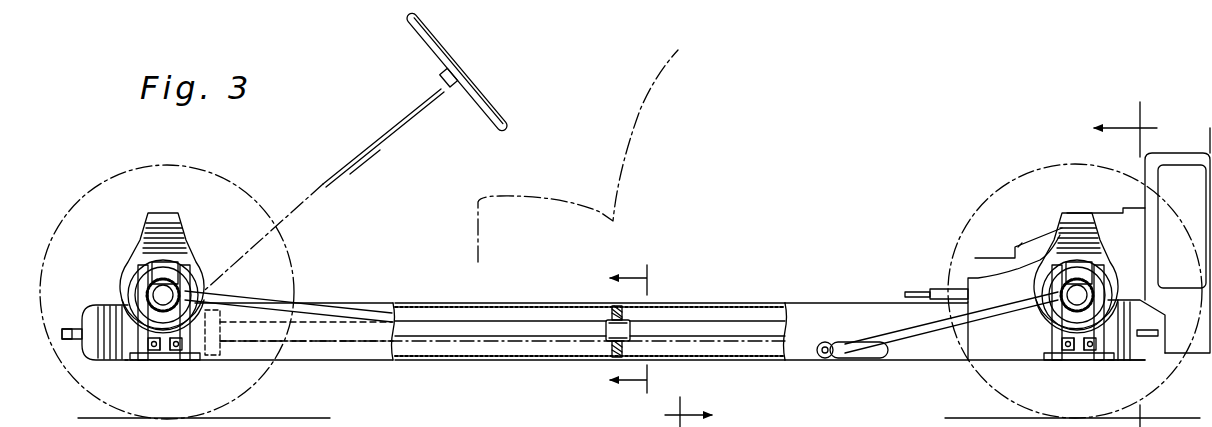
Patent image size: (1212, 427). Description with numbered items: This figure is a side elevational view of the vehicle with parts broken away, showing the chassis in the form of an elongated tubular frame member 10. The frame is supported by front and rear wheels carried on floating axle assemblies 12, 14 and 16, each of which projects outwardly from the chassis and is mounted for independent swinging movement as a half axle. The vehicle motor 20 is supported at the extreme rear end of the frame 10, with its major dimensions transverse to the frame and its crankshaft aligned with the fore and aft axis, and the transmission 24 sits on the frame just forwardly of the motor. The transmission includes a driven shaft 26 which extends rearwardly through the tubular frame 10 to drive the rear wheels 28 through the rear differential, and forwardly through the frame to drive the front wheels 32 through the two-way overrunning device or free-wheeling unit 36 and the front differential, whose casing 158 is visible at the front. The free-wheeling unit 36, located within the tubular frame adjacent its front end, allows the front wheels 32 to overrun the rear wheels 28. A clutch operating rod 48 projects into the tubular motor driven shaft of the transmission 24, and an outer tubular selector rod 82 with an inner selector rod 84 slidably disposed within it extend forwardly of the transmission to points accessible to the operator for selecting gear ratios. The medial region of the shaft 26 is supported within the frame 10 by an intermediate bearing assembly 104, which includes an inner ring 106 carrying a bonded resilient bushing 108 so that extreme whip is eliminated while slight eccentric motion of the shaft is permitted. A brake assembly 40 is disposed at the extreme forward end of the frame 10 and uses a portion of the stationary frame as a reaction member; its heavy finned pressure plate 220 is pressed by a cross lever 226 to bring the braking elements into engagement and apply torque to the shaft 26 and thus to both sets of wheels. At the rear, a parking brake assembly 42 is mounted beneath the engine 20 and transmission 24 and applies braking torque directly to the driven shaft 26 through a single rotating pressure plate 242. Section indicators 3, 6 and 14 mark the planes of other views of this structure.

The section line 3 is at (1131, 264).
The section line 6 is at (678, 412).
The tubular frame member 10 is at (797, 305).
The floating axle assembly 12 is at (141, 294).
The floating axle assembly 14 is at (642, 329).
The floating axle assembly 16 is at (1066, 305).
The vehicle motor 20 is at (1144, 192).
The transmission 24 is at (1022, 243).
The driven shaft 26 is at (533, 336).
The rear wheels 28 is at (966, 219).
The front wheels 32 is at (300, 270).
The two-way overrunning device or free-wheeling unit 36 is at (224, 352).
The brake assembly 40 is at (86, 366).
The parking brake assembly 42 is at (1141, 352).
The clutch operating rod 48 is at (985, 258).
The outer tubular selector rod 82 is at (940, 289).
The inner selector rod 84 is at (907, 292).
The intermediate bearing assembly 104 is at (604, 311).
The inner ring 106 is at (632, 320).
The resilient bushing 108 is at (627, 349).
The casing 158 is at (200, 287).
The pressure plate 220 is at (88, 316).
The cross lever 226 is at (64, 332).
The rotating pressure plate 242 is at (1125, 360).